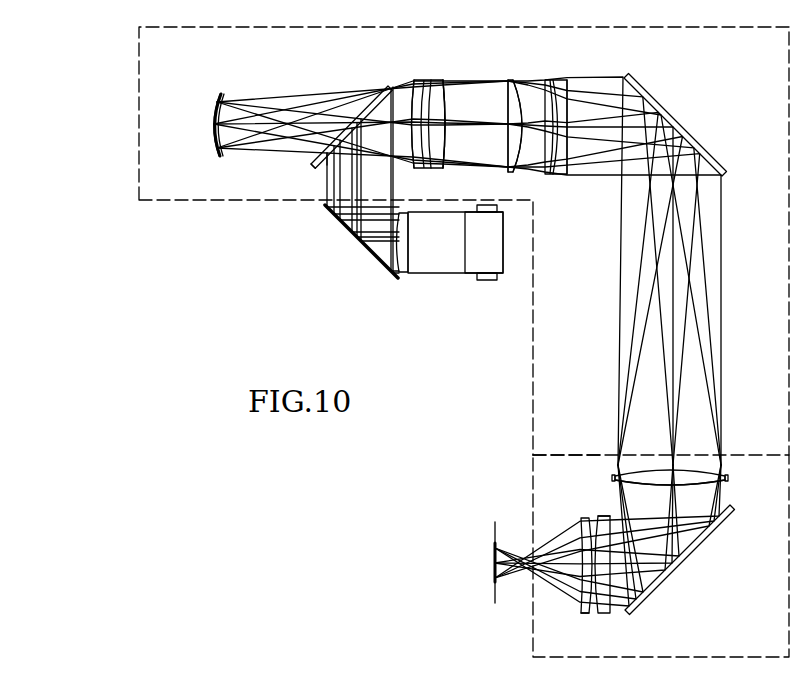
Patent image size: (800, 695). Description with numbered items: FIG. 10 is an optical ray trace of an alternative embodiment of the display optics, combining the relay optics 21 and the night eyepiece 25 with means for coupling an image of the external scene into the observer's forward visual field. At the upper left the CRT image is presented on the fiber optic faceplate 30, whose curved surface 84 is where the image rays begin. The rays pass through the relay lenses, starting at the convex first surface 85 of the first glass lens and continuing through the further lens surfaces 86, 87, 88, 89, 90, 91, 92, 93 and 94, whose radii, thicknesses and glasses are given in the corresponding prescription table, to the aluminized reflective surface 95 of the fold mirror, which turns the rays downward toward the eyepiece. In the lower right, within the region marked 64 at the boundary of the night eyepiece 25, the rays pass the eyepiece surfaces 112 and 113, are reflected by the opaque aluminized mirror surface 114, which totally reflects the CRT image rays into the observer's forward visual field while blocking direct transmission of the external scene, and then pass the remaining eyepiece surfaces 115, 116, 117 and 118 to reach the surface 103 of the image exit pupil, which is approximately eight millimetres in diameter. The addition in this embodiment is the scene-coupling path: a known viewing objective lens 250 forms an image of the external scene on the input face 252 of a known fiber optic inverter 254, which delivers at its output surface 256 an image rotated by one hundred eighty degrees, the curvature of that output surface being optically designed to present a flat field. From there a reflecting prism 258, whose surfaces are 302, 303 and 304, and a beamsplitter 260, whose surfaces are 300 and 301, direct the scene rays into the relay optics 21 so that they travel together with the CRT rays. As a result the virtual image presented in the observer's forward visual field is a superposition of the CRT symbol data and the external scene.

The relay optics 21 is at (124, 76).
The fiber optic faceplate 30 is at (222, 93).
The faceplate surface 84 is at (222, 137).
The beamsplitter surface 300 is at (390, 85).
The beamsplitter 260 is at (312, 166).
The beamsplitter surface 301 is at (326, 172).
The prism surface 304 is at (333, 210).
The reflecting prism 258 is at (346, 240).
The prism surface 303 is at (372, 257).
The prism surface 302 is at (402, 280).
The output surface 256 is at (410, 231).
The fiber optic inverter 254 is at (434, 255).
The input face 252 is at (462, 263).
The viewing objective lens 250 is at (476, 220).
The first surface 85 is at (413, 170).
The lens element 86 is at (416, 80).
The lens element 87 is at (444, 100).
The lens surface 88 is at (448, 99).
The lens surface 89 is at (508, 115).
The lens surface 90 is at (527, 145).
The lens 91 is at (535, 160).
The lens element 92 is at (545, 90).
The lens element 93 is at (560, 98).
The lens surface 94 is at (568, 165).
The fold mirror surface 95 is at (627, 80).
The detector optics 64 is at (551, 455).
The night eyepiece 25 is at (533, 470).
The image exit pupil surface 103 is at (495, 522).
The field lens 112 is at (676, 473).
The lens surface 113 is at (668, 490).
The mirror surface 114 is at (714, 540).
The lens group 115 is at (609, 516).
The lens 116 is at (590, 522).
The lens 117 is at (599, 613).
The lens surface 118 is at (581, 614).